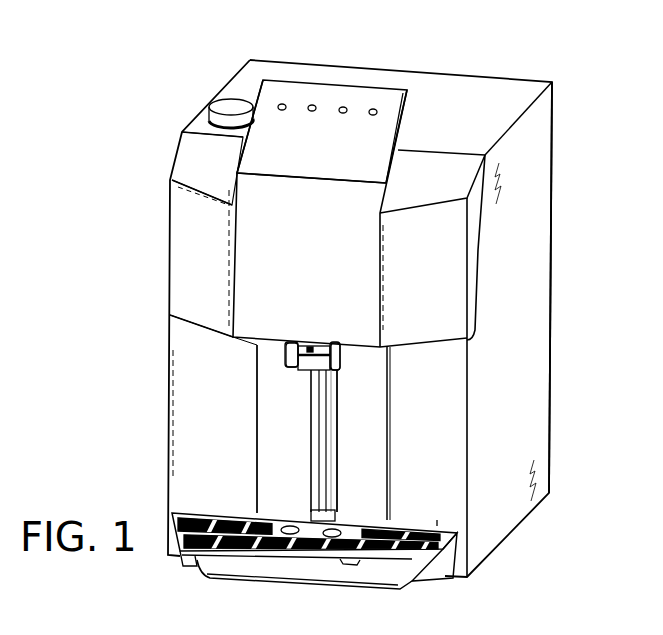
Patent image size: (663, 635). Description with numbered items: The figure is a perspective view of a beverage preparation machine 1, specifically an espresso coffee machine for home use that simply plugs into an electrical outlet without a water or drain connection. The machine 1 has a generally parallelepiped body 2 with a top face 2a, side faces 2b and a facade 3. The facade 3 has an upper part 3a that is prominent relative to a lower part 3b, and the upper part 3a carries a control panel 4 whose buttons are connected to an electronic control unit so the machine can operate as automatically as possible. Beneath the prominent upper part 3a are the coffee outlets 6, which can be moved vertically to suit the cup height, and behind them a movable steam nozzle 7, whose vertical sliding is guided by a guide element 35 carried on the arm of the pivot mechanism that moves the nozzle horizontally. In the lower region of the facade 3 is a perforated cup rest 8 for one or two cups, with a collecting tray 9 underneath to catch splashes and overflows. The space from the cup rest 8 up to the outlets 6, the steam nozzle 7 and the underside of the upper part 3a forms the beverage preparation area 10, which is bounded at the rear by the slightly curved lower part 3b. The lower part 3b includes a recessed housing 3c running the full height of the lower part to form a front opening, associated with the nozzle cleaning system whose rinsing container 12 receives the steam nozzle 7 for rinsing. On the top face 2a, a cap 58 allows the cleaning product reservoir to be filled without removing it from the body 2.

The beverage preparation machine 1 is at (522, 62).
The body 2 is at (542, 152).
The top face 2a is at (438, 85).
The side faces 2b is at (537, 252).
The facade 3 is at (197, 331).
The upper part of the facade 3a is at (186, 246).
The lower part of the facade 3b is at (183, 383).
The recessed housing 3c is at (310, 440).
The control panel 4 is at (330, 112).
The cap 58 is at (228, 105).
The outlets 6 is at (335, 348).
The steam nozzle 7 is at (313, 367).
The guide element 35 is at (338, 368).
The rinsing container 12 is at (337, 443).
The beverage preparation area 10 is at (240, 503).
The collecting tray 9 is at (437, 567).
The cup rest 8 is at (437, 524).